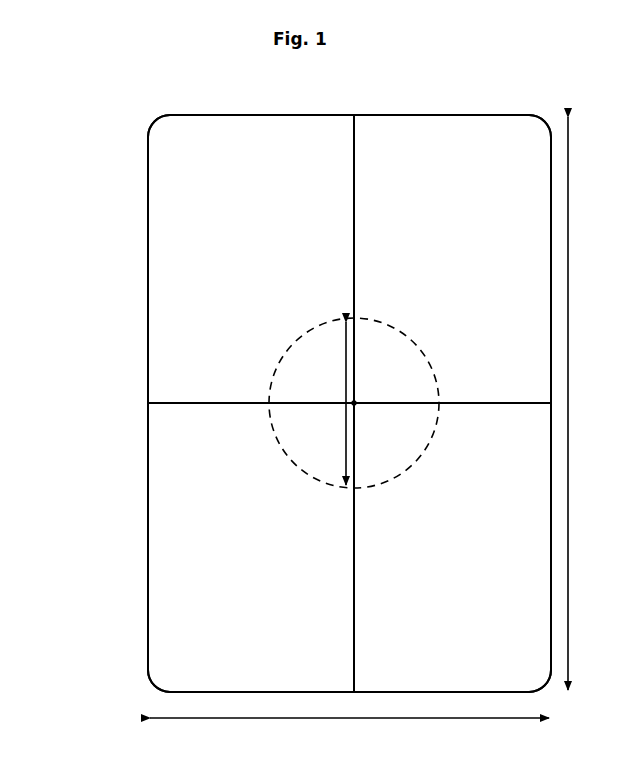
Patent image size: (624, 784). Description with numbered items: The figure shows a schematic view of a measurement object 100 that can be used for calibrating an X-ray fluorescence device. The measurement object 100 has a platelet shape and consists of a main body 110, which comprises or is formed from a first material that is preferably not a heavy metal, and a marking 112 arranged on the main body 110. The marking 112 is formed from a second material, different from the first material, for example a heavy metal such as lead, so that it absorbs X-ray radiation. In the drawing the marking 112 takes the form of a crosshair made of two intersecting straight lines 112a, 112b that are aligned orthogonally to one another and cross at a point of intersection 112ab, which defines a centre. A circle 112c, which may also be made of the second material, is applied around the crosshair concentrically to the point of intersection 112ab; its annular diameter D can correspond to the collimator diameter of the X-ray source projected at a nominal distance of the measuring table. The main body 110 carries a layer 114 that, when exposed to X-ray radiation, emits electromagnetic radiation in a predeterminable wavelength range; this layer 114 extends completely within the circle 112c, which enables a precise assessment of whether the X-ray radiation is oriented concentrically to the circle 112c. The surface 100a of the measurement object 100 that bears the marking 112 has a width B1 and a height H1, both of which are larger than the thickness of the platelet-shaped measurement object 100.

The measurement object 100 is at (64, 119).
The surface of the measurement object 100a is at (464, 208).
The main body 110 is at (148, 305).
The marking 112 is at (243, 239).
The intersecting line 112a is at (353, 590).
The intersecting line 112b is at (499, 404).
The point of intersection 112ab is at (356, 402).
The circle 112c is at (279, 360).
The layer 114 is at (327, 390).
The annular diameter D is at (332, 403).
The height H1 is at (586, 403).
The width B1 is at (349, 736).